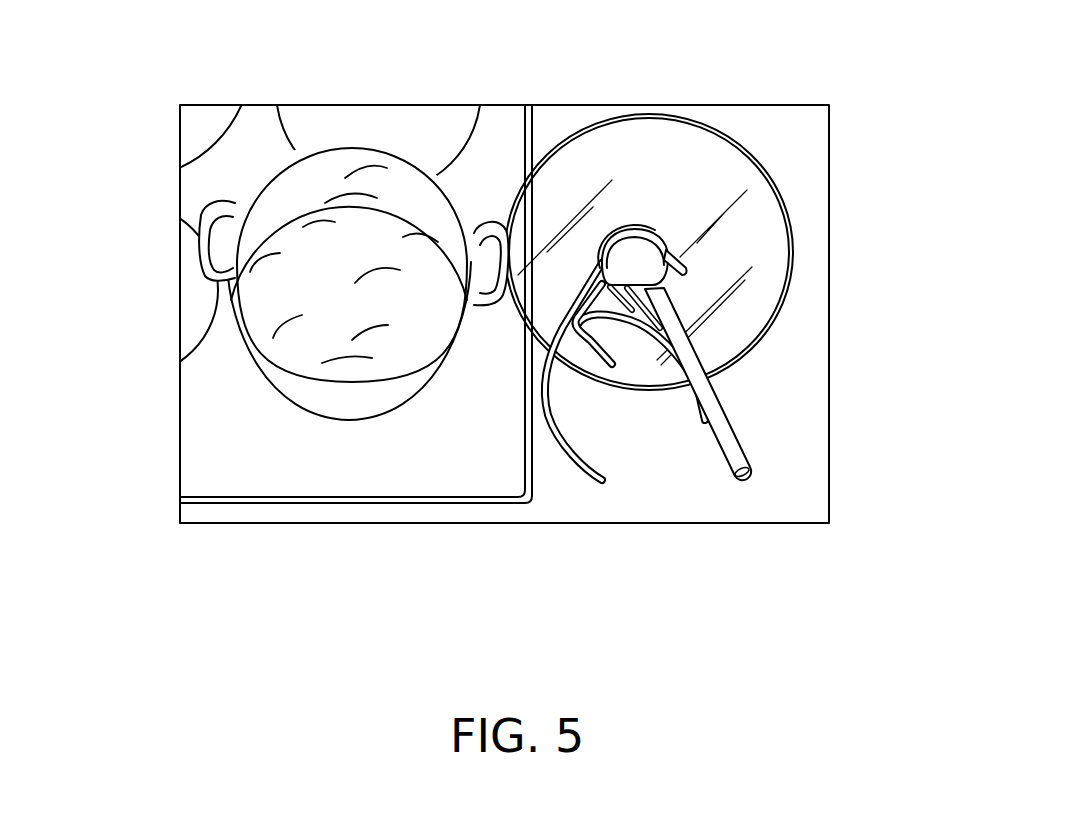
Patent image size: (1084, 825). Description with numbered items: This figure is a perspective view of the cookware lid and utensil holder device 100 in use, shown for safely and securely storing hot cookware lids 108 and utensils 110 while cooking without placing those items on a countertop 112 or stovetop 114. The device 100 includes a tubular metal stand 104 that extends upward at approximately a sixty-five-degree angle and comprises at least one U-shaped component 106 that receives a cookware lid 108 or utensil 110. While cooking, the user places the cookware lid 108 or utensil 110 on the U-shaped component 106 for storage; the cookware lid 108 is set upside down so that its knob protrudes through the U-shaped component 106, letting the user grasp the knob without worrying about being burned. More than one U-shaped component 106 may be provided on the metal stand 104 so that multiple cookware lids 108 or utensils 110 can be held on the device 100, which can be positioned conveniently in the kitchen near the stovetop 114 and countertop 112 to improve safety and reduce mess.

The cookware lid and utensil holder device 100 is at (763, 378).
The metal stand 104 is at (613, 382).
The U-shaped component 106 is at (637, 228).
The cookware lid 108 is at (727, 267).
The utensil 110 is at (727, 440).
The countertop 112 is at (797, 487).
The stovetop 114 is at (218, 418).